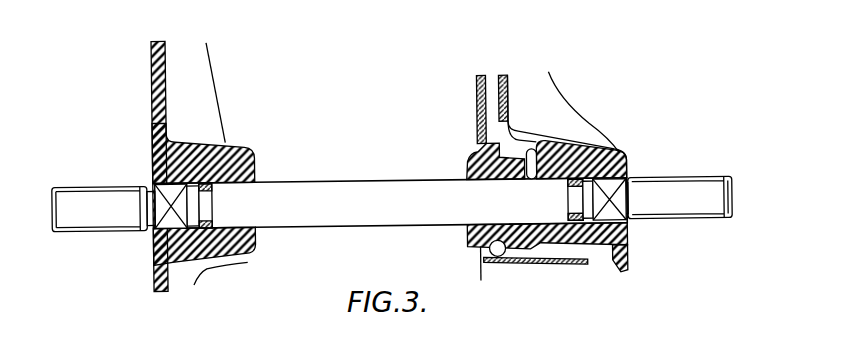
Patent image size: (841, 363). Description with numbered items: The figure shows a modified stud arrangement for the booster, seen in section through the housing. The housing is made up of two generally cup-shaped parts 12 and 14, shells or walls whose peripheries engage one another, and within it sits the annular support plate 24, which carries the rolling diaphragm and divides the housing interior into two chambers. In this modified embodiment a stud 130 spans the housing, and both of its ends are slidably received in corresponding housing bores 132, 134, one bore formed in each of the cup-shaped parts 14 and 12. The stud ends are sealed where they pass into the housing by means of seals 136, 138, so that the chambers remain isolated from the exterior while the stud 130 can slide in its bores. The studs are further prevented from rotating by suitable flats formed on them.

The cup-shaped housing part 12 is at (527, 103).
The cup-shaped housing part 14 is at (180, 90).
The annular support plate 24 is at (483, 112).
The stud 130 is at (325, 210).
The housing bore 132 is at (238, 185).
The housing bore 134 is at (567, 157).
The seal 136 is at (214, 156).
The seal 138 is at (577, 262).